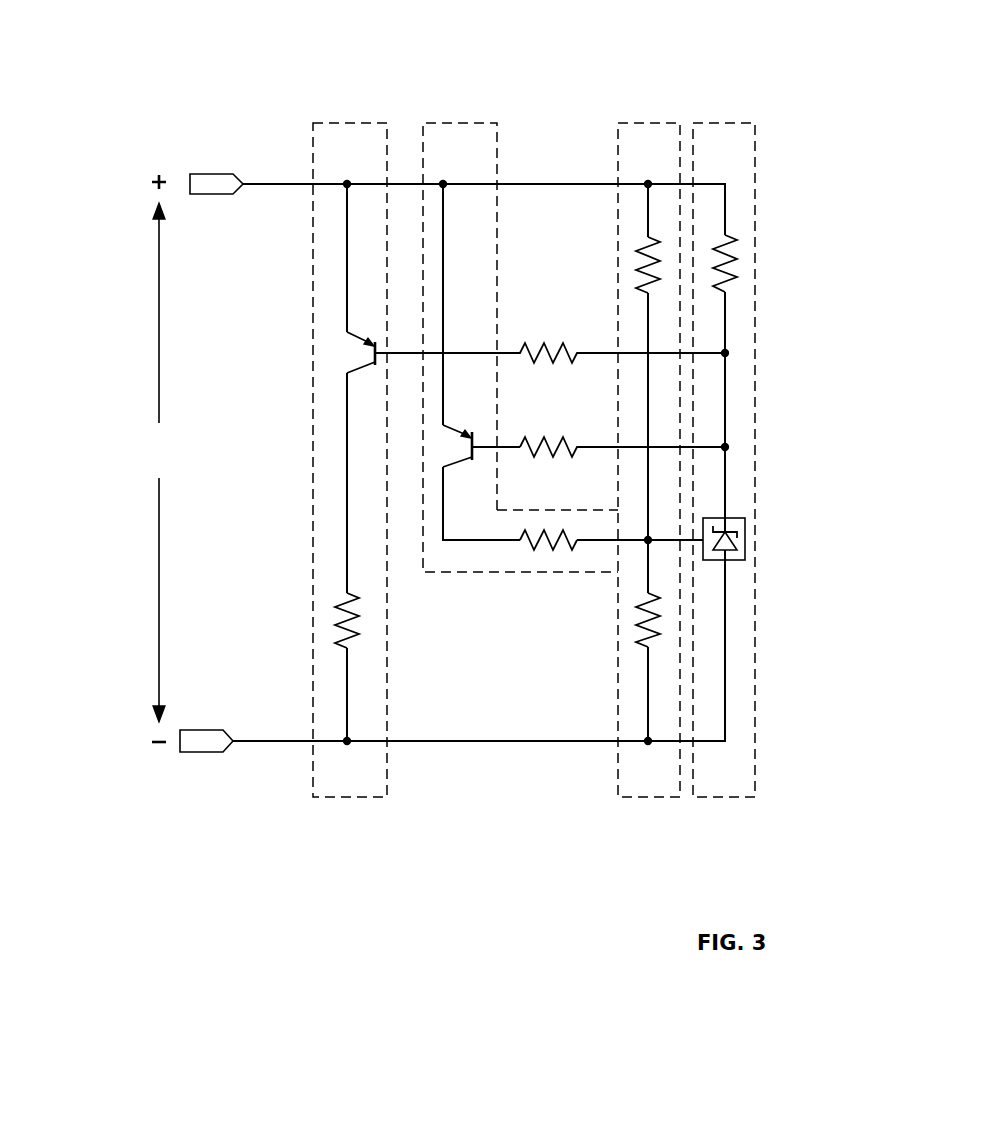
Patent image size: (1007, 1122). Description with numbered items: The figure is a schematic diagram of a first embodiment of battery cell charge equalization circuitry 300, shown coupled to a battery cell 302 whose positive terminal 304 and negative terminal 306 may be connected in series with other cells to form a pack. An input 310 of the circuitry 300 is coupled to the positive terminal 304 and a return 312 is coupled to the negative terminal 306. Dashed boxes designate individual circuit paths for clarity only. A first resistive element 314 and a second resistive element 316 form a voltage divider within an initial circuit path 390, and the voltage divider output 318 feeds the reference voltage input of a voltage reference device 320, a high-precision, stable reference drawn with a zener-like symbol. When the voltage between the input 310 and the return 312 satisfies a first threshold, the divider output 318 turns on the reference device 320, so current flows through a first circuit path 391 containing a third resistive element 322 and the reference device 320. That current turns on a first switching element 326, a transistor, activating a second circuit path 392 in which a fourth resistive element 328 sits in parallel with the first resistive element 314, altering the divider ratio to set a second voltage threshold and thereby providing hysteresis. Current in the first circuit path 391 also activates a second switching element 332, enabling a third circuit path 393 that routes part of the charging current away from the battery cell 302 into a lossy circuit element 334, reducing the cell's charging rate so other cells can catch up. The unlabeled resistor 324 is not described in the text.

The battery cell charge equalization circuitry 300 is at (238, 40).
The battery cell 302 is at (123, 442).
The positive terminal 304 is at (190, 175).
The negative terminal 306 is at (180, 740).
The input 310 is at (598, 184).
The return 312 is at (507, 741).
The first resistive element 314 is at (612, 243).
The second resistive element 316 is at (615, 670).
The voltage divider output 318 is at (677, 541).
The voltage reference device 320 is at (745, 520).
The third resistive element 322 is at (752, 240).
The resistor 324 is at (538, 472).
The first switching element 326 is at (472, 404).
The fourth resistive element 328 is at (528, 570).
The second switching element 332 is at (325, 335).
The lossy circuit element 334 is at (322, 585).
The initial circuit path 390 is at (647, 123).
The first circuit path 391 is at (722, 123).
The second circuit path 392 is at (460, 123).
The third circuit path 393 is at (350, 123).